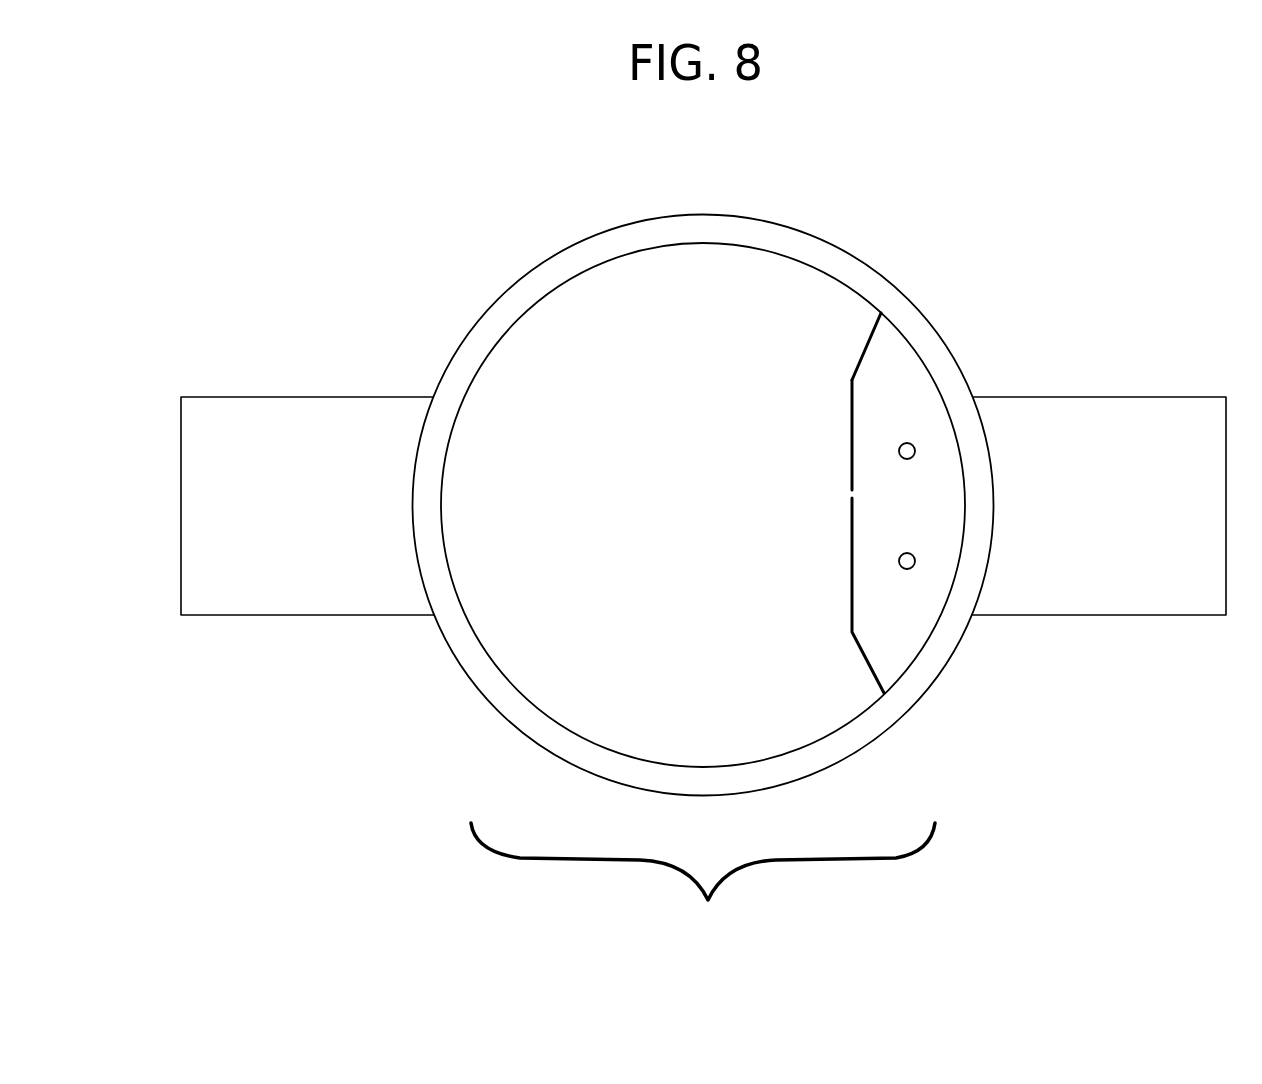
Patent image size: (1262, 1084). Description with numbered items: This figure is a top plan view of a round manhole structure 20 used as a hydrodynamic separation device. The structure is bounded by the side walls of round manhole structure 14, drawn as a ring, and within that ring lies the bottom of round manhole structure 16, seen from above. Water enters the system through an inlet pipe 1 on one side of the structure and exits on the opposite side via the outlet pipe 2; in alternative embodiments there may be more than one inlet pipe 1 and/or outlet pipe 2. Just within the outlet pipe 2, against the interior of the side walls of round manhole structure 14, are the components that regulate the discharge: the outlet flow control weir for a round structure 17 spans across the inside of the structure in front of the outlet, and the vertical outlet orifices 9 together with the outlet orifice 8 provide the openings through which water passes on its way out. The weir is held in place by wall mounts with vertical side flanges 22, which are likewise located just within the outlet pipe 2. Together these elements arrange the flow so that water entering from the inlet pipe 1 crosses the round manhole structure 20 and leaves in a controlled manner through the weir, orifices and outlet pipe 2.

The inlet pipe 1 is at (277, 423).
The outlet pipe 2 is at (1080, 402).
The outlet orifice 8 is at (852, 490).
The vertical outlet orifices 9 is at (908, 563).
The side walls of round manhole structure 14 is at (485, 690).
The bottom of round manhole structure 16 is at (623, 685).
The outlet flow control weir for a round structure 17 is at (848, 400).
The round manhole structure 20 is at (703, 898).
The wall mounts with vertical side flanges 22 is at (878, 316).